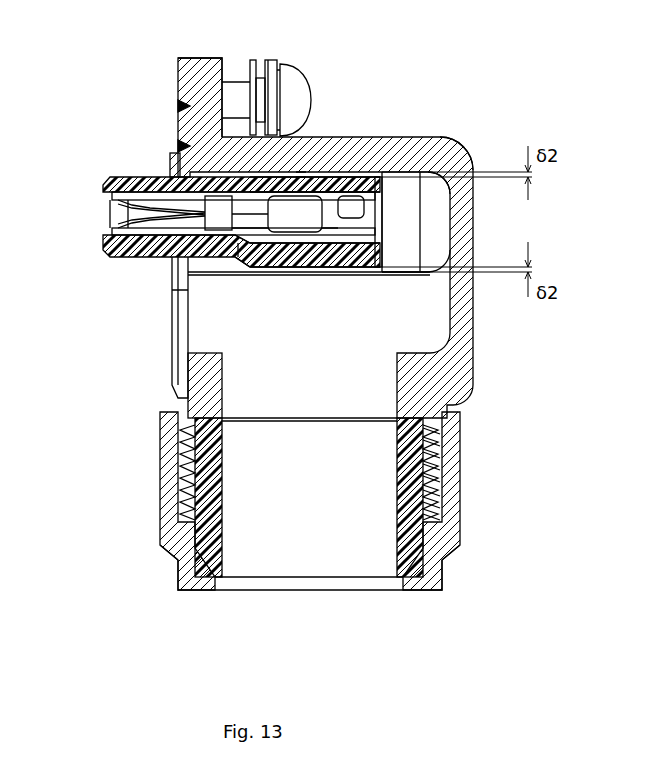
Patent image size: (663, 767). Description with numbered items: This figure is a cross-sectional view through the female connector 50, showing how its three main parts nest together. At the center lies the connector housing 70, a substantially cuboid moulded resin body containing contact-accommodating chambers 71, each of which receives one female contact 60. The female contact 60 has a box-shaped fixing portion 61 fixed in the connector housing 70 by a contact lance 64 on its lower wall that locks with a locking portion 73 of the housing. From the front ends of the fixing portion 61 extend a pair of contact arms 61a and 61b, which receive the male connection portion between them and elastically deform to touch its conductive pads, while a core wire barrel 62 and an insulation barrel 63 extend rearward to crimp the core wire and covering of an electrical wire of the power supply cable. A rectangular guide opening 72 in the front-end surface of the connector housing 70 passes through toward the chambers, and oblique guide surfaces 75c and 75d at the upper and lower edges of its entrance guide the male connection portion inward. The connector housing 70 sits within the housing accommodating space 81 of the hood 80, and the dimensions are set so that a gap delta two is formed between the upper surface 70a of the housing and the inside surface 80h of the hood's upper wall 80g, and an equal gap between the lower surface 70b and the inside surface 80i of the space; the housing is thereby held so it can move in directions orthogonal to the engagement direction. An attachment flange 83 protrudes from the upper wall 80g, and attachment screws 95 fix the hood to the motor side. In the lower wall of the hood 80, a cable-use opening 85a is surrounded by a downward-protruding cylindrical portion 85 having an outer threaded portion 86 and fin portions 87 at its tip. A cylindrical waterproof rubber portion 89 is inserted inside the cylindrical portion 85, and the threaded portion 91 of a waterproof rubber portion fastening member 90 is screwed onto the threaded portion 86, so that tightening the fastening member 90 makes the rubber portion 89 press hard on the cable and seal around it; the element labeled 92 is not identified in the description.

The female connector 50 is at (471, 117).
The female contact 60 is at (159, 259).
The fixing portion 61 is at (178, 154).
The contact arm 61a is at (136, 193).
The contact arm 61b is at (132, 258).
The core wire barrel 62 is at (318, 178).
The insulation barrel 63 is at (446, 200).
The contact lance 64 is at (223, 268).
The connector housing 70 is at (346, 190).
The upper surface of connector housing 70a is at (378, 178).
The lower surface of connector housing 70b is at (313, 269).
The contact-accommodating chamber 71 is at (446, 224).
The guide opening 72 is at (108, 216).
The locking portion 73 is at (238, 268).
The oblique guide surface 75c is at (108, 204).
The oblique guide surface 75d is at (108, 229).
The hood 80 is at (474, 336).
The upper wall of hood 80g is at (441, 142).
The inside surface of upper wall 80h is at (302, 176).
The inside surface of housing accommodating space 80i is at (272, 274).
The housing accommodating space 81 is at (416, 240).
The attachment flange 83 is at (193, 58).
The cylindrical portion 85 is at (448, 410).
The cable-use opening 85a is at (398, 401).
The threaded portion 86 is at (440, 456).
The fin portion 87 is at (446, 548).
The waterproof rubber portion 89 is at (415, 512).
The waterproof rubber portion fastening member 90 is at (444, 579).
The threaded portion 91 is at (440, 438).
The nut 92 is at (462, 498).
The attachment screw 95 is at (292, 64).